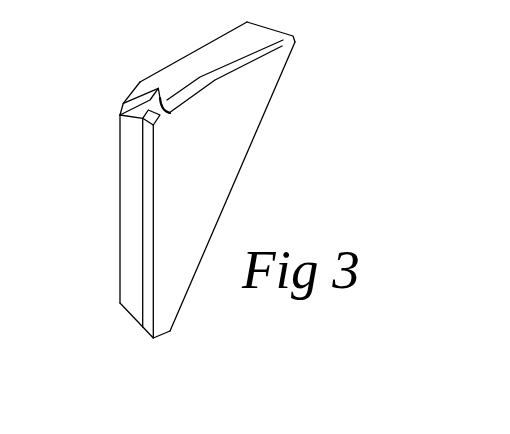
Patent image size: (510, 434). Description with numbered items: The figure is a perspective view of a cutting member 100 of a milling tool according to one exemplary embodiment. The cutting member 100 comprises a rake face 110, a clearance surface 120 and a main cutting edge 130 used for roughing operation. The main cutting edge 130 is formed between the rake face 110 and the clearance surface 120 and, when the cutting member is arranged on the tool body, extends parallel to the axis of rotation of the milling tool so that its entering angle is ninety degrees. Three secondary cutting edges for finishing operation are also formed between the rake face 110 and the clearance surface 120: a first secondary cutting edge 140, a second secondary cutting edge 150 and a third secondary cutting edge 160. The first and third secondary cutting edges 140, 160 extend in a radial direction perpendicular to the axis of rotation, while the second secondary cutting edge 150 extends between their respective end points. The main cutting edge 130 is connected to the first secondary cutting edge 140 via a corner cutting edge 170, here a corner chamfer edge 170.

The cutting member 100 is at (323, 121).
The rake face 110 is at (211, 166).
The clearance surface 120 is at (128, 285).
The main cutting edge 130 is at (148, 320).
The first secondary cutting edge 140 is at (148, 119).
The second secondary cutting edge 150 is at (168, 108).
The third secondary cutting edge 160 is at (274, 44).
The corner cutting edge 170 is at (154, 128).